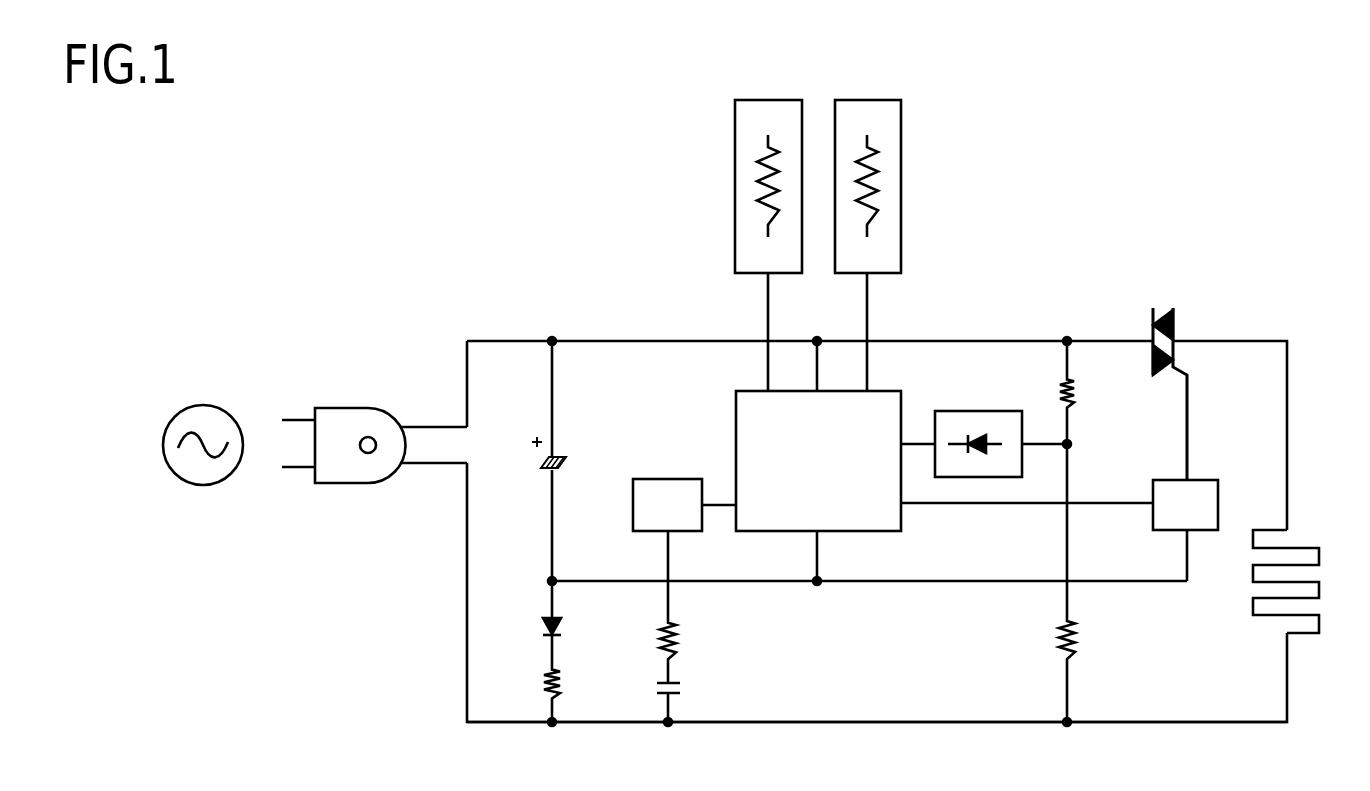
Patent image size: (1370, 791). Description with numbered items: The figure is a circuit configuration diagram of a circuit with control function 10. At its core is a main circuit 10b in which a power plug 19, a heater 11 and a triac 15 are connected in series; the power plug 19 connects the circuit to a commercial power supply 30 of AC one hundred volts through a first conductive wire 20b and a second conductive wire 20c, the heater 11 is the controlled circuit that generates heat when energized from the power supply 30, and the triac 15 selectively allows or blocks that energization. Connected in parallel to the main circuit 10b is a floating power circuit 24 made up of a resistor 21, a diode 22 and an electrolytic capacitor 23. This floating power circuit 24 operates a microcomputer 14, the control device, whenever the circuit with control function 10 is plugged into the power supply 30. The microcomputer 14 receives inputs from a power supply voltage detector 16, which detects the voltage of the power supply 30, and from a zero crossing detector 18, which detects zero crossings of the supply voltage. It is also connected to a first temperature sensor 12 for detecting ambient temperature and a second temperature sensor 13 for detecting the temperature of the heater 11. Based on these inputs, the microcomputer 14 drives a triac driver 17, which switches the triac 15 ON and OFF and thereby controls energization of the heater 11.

The circuit with control function 10 is at (1018, 273).
The main circuit 10b is at (852, 723).
The heater 11 is at (1318, 557).
The first temperature sensor 12 is at (745, 150).
The second temperature sensor 13 is at (888, 138).
The microcomputer 14 is at (833, 477).
The triac 15 is at (1175, 325).
The power supply voltage detector 16 is at (997, 417).
The triac driver 17 is at (1211, 485).
The zero crossing detector 18 is at (653, 488).
The power plug 19 is at (335, 472).
The first conductive wire 20b is at (423, 425).
The second conductive wire 20c is at (423, 467).
The resistor 21 is at (558, 677).
The diode 22 is at (562, 628).
The electrolytic capacitor 23 is at (560, 455).
The floating power circuit 24 is at (550, 507).
The commercial power supply 30 is at (208, 408).